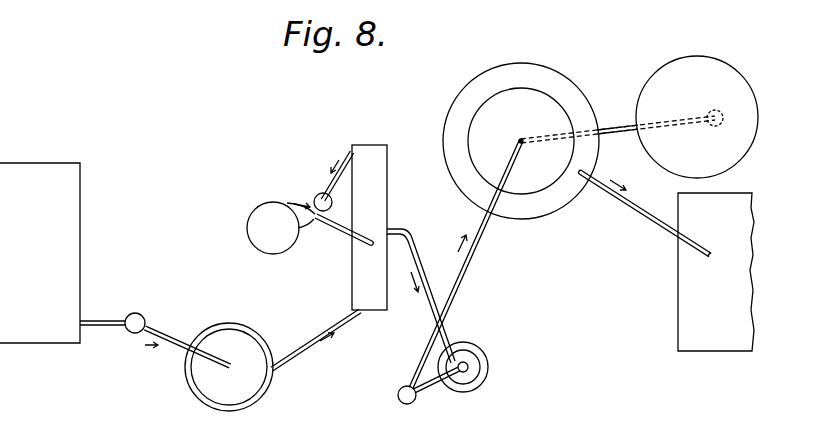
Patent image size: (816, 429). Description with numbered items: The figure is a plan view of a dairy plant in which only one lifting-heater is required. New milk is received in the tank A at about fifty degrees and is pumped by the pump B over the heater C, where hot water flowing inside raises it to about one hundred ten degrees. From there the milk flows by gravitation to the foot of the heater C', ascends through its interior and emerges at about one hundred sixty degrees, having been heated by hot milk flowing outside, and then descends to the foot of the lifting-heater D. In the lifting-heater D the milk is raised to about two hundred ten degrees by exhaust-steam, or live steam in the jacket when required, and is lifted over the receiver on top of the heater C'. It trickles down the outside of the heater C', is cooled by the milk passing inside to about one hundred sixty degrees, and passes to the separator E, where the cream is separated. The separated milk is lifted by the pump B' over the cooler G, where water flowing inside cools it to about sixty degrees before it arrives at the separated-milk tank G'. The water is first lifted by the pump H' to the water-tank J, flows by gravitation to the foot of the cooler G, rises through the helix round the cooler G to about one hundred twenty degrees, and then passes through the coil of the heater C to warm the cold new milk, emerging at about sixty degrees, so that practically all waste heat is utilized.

The tank A is at (40, 253).
The pump B is at (155, 328).
The heater C is at (273, 360).
The heater C' is at (354, 227).
The lifting-heater D is at (262, 212).
The pump B' is at (419, 385).
The separator E is at (449, 310).
The cooler G is at (562, 226).
The separated-milk tank G' is at (666, 260).
The water-tank J is at (697, 117).
The pump H' is at (723, 101).